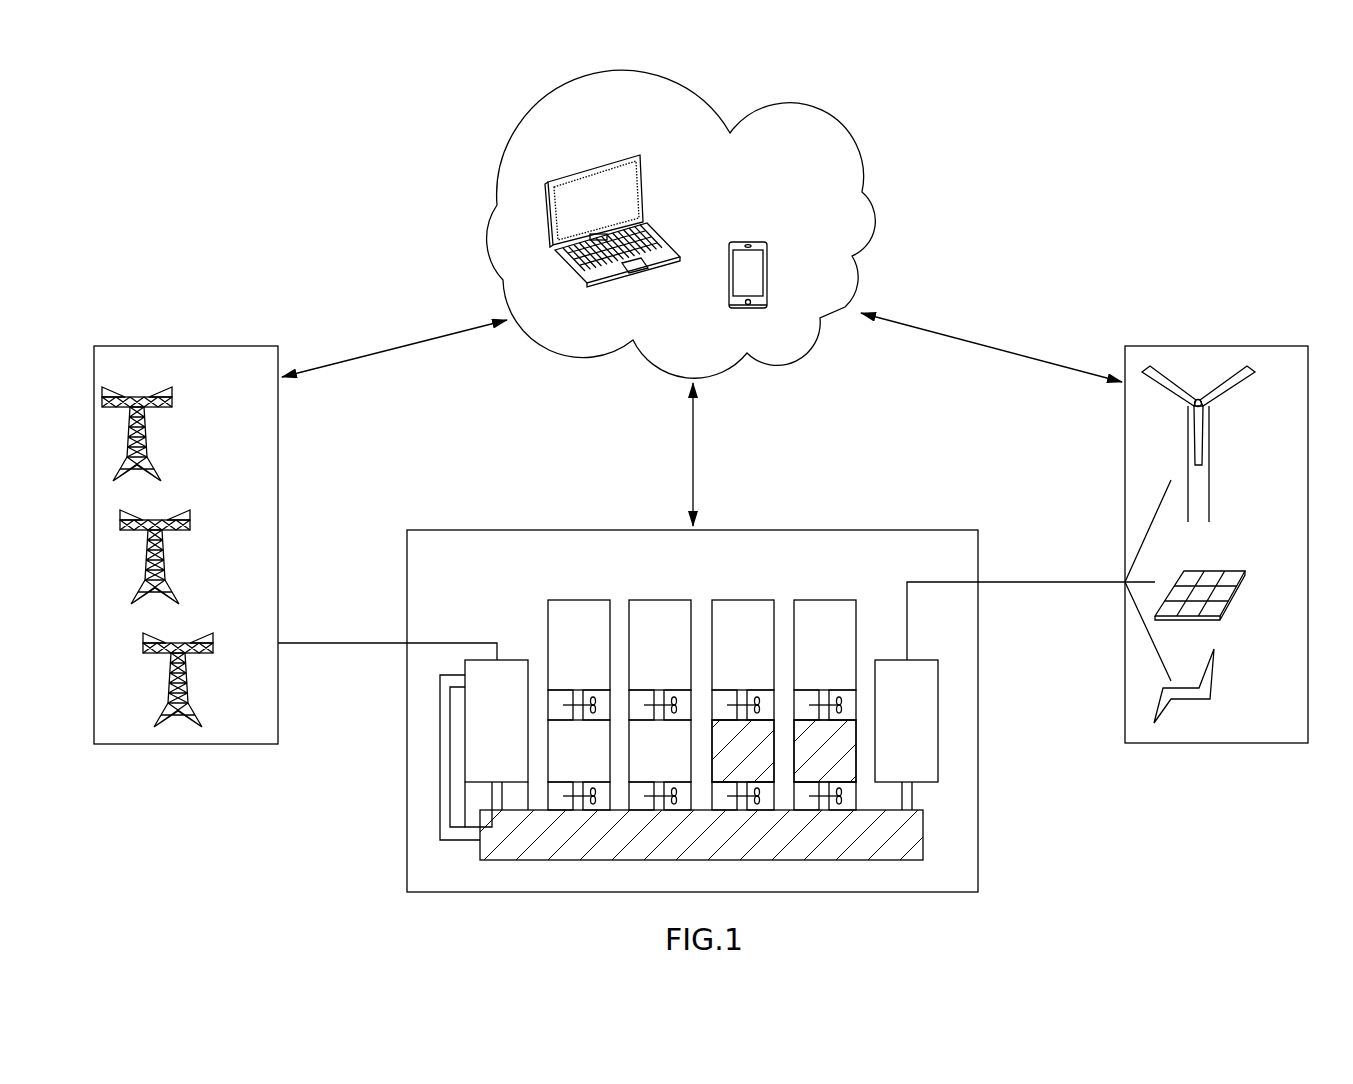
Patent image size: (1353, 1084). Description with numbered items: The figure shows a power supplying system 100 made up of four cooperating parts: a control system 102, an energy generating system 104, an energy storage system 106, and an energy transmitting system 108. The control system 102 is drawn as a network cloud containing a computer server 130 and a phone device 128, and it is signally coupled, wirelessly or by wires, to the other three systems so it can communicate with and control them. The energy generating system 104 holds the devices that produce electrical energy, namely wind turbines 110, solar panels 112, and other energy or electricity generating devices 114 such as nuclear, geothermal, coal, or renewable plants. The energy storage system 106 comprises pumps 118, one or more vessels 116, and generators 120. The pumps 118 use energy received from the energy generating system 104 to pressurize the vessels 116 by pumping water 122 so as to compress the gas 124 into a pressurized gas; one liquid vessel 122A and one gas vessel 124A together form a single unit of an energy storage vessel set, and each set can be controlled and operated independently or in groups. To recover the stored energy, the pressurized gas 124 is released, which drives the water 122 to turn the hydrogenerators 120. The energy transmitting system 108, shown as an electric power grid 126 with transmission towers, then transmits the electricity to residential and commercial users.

The power supplying system 100 is at (1192, 73).
The control system 102 is at (841, 117).
The energy generating system 104 is at (1216, 511).
The energy storage system 106 is at (729, 675).
The energy transmitting system 108 is at (186, 511).
The wind turbines 110 is at (1211, 472).
The solar panels 112 is at (1219, 561).
The energy/electricity generating devices 114 is at (1223, 669).
The vessels 116 is at (640, 676).
The pumps 118 is at (941, 700).
The generators 120 is at (520, 731).
The water 122 is at (578, 747).
The gas 124 is at (579, 705).
The liquid vessel 122A is at (512, 685).
The gas vessel 124A is at (517, 690).
The electric power grid 126 is at (187, 429).
The phone device 128 is at (758, 231).
The computer server 130 is at (656, 212).